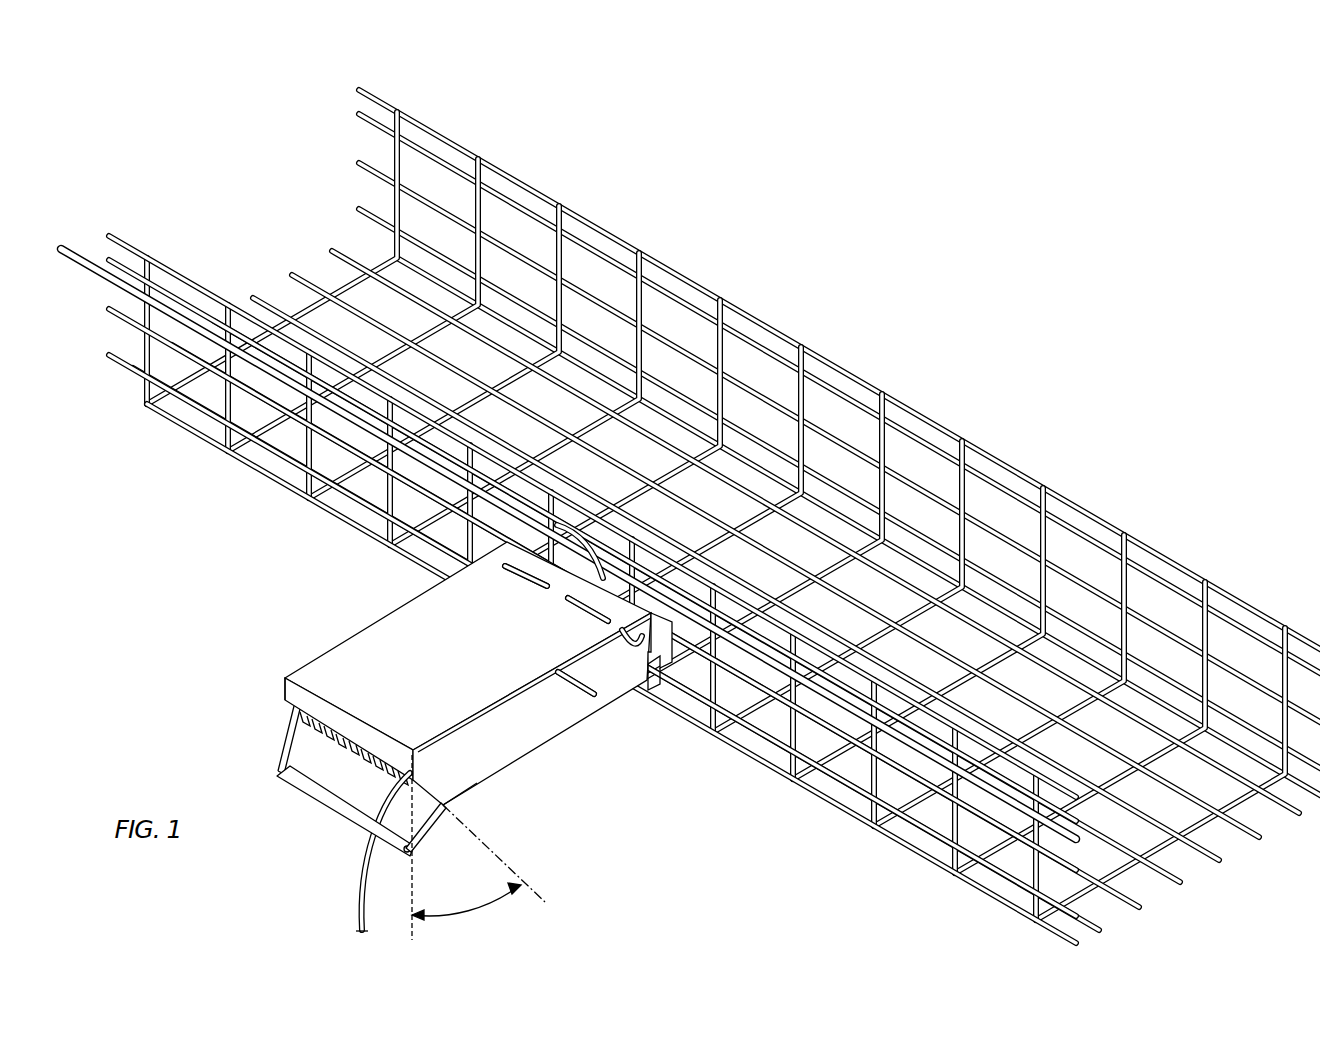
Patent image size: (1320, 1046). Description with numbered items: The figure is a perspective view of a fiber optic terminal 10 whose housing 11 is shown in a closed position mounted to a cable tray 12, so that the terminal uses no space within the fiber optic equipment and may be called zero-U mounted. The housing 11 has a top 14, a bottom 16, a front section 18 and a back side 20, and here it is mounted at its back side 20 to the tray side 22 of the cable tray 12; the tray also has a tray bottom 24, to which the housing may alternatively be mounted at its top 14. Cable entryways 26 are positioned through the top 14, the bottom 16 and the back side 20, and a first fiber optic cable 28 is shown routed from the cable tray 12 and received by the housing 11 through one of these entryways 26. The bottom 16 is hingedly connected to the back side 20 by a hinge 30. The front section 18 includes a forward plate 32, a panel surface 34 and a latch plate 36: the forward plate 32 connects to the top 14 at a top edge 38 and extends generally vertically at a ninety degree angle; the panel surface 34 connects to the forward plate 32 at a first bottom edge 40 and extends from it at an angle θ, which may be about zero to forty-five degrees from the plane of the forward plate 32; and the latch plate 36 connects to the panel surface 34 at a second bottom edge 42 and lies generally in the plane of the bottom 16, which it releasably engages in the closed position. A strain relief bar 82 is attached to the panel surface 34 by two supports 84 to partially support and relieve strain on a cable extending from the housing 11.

The fiber optic terminal 10 is at (284, 592).
The housing 11 is at (362, 632).
The cable tray 12 is at (822, 345).
The top 14 is at (470, 661).
The bottom 16 is at (546, 746).
The front section 18 is at (284, 692).
The back side 20 is at (657, 693).
The tray side 22 is at (353, 507).
The tray bottom 24 is at (412, 551).
The cable entryways 26 is at (637, 634).
The first fiber optic cable 28 is at (340, 414).
The hinge 30 is at (647, 710).
The forward plate 32 is at (296, 711).
The panel surface 34 is at (490, 850).
The latch plate 36 is at (467, 800).
The top edge 38 is at (284, 677).
The first bottom edge 40 is at (283, 706).
The second bottom edge 42 is at (443, 805).
The strain relief bar 82 is at (323, 807).
The supports 84 is at (290, 760).